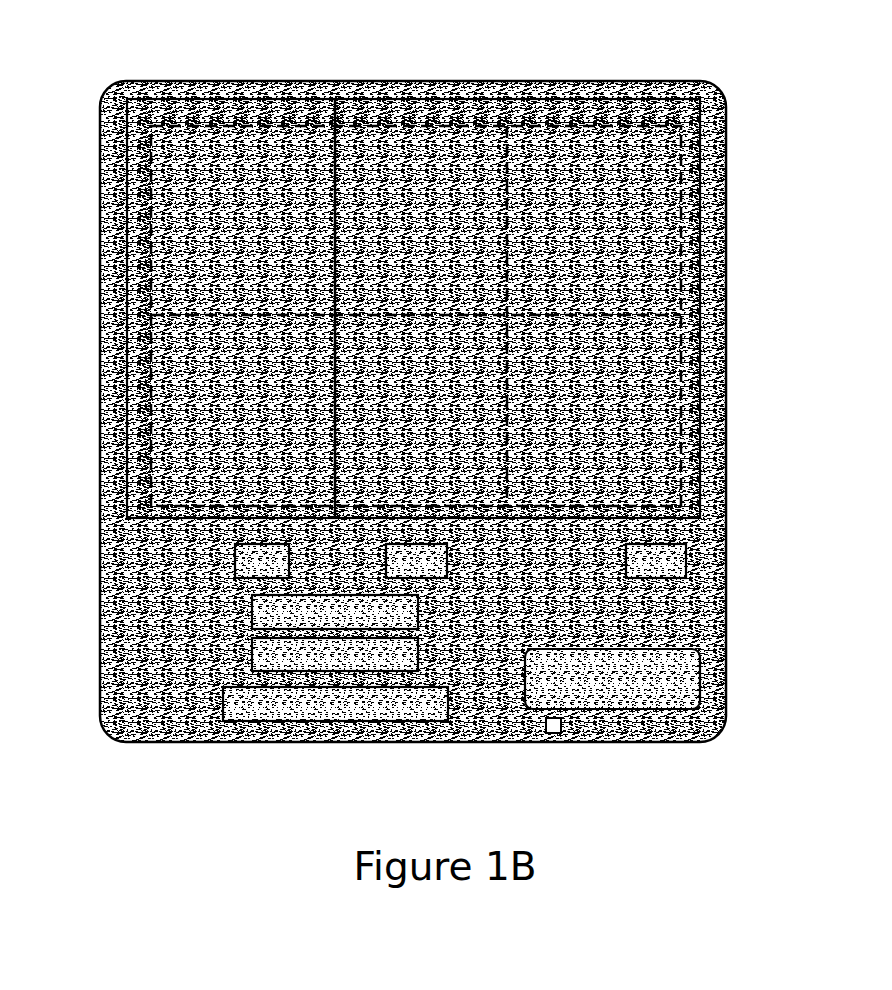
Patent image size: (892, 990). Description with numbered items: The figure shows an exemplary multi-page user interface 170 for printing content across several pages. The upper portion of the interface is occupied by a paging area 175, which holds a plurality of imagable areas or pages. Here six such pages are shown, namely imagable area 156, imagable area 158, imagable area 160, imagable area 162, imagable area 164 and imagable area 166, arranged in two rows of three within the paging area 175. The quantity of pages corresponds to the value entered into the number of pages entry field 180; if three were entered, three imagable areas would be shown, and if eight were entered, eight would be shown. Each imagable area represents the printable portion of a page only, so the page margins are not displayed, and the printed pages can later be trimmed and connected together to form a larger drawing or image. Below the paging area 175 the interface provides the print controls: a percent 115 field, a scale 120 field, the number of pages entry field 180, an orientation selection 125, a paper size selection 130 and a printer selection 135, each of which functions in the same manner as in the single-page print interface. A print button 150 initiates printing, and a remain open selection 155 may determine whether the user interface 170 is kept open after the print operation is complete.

The multi-page user interface 170 is at (133, 73).
The paging area 175 is at (277, 91).
The imagable area 156 is at (243, 220).
The imagable area 158 is at (421, 220).
The imagable area 160 is at (594, 220).
The imagable area 162 is at (243, 410).
The imagable area 164 is at (421, 410).
The imagable area 166 is at (594, 410).
The percent 115 is at (228, 548).
The scale 120 is at (437, 571).
The number of pages entry field 180 is at (678, 548).
The orientation selection 125 is at (244, 612).
The paper size selection 130 is at (244, 660).
The printer selection 135 is at (323, 713).
The print button 150 is at (692, 665).
The remain open selection 155 is at (545, 725).